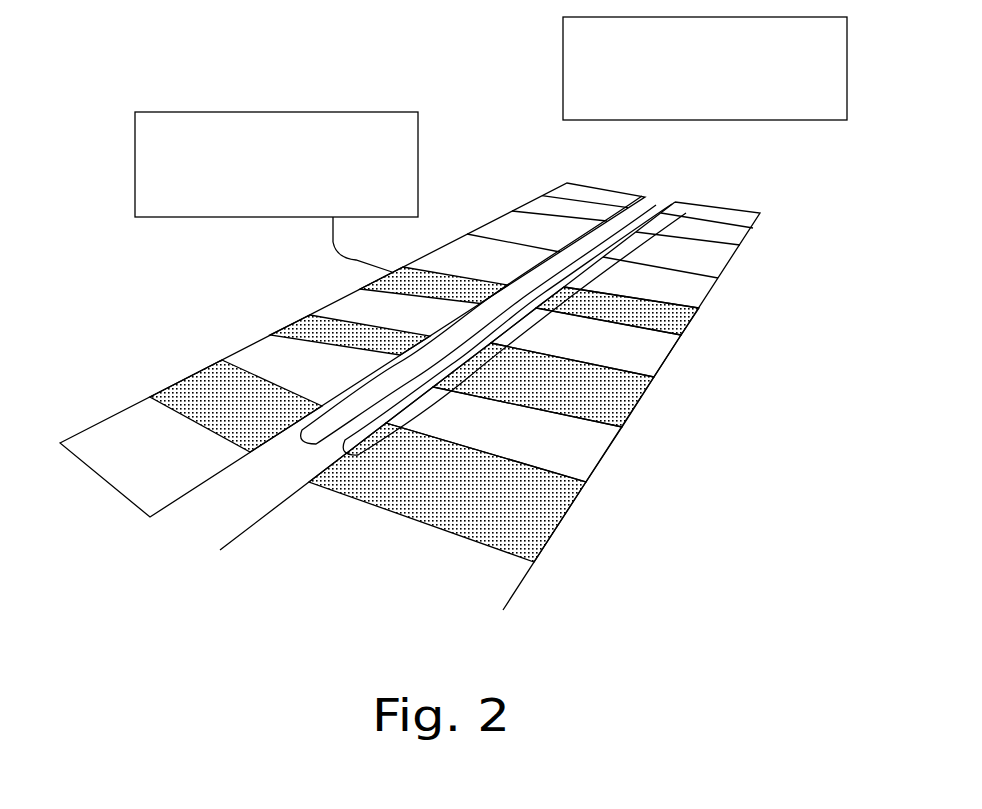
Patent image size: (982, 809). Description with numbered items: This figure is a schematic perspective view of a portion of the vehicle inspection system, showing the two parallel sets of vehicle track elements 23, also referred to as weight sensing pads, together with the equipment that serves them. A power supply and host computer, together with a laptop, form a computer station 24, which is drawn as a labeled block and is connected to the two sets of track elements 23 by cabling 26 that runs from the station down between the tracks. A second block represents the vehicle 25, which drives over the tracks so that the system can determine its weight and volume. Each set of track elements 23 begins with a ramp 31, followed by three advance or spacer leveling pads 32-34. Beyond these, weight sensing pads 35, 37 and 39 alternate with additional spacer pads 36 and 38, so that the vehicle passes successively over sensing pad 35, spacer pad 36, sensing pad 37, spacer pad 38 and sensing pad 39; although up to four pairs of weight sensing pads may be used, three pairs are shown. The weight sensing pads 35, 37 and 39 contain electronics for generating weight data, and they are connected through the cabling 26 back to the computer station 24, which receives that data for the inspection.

The vehicle track elements 23 is at (722, 403).
The computer station 24 is at (290, 112).
The vehicle 25 is at (713, 122).
The cabling 26 is at (318, 442).
The ramp 31 is at (765, 218).
The advance or spacer leveling pads 32-34 is at (748, 238).
The weight sensing pad 35 is at (690, 323).
The spacer pad 36 is at (672, 350).
The weight sensing pad 37 is at (645, 393).
The spacer pad 38 is at (603, 458).
The weight sensing pad 39 is at (557, 512).